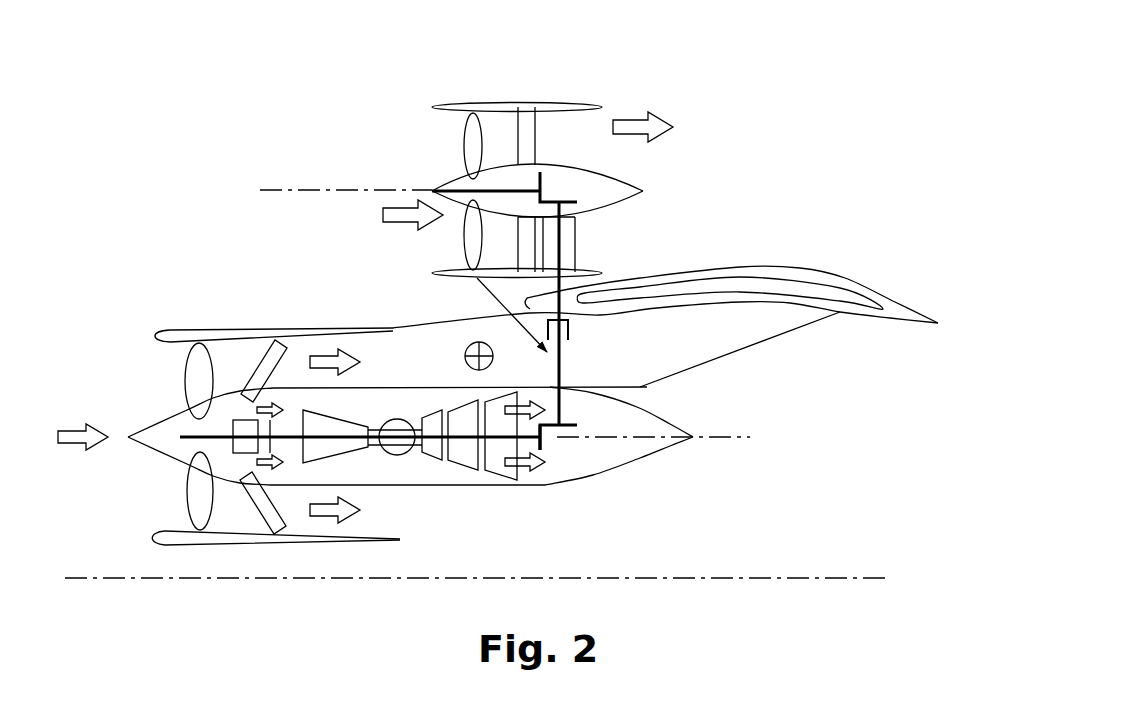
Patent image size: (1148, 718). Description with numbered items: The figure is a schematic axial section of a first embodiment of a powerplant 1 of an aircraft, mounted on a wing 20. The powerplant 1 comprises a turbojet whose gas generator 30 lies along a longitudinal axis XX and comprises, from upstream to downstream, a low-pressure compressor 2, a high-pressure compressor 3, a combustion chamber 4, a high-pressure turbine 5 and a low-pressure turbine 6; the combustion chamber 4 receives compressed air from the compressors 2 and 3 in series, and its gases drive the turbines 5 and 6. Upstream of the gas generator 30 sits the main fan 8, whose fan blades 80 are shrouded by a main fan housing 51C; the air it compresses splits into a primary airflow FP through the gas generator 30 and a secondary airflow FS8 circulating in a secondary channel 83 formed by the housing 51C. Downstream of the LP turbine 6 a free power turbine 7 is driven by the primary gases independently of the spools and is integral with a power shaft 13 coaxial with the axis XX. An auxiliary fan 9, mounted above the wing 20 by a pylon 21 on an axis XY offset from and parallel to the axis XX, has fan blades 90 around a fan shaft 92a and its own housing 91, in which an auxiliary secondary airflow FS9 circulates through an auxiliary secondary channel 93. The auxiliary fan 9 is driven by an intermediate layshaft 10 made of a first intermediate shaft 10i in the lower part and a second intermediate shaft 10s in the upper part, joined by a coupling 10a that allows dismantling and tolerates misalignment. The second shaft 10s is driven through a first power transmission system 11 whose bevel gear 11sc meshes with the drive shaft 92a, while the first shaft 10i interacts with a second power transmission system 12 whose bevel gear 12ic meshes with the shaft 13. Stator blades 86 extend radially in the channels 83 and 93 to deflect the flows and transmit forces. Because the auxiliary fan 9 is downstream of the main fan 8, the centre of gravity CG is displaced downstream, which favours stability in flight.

The powerplant 1 is at (360, 168).
The low-pressure compressor 2 is at (285, 455).
The high-pressure compressor 3 is at (355, 448).
The combustion chamber 4 is at (397, 450).
The high-pressure turbine 5 is at (428, 458).
The low-pressure turbine 6 is at (462, 458).
The free power turbine 7 is at (493, 470).
The main fan 8 is at (187, 497).
The auxiliary fan 9 is at (580, 98).
The intermediate layshaft 10 is at (580, 334).
The coupling 10a is at (540, 316).
The first intermediate shaft 10i is at (560, 363).
The second intermediate shaft 10s is at (565, 237).
The first power transmission system 11 is at (568, 202).
The bevel gear 11sc is at (624, 177).
The second power transmission system 12 is at (577, 427).
The bevel gear 12ic is at (600, 475).
The power shaft 13 is at (540, 450).
The wing 20 is at (665, 259).
The pylon 21 is at (647, 272).
The gas generator 30 is at (366, 523).
The main fan housing 51C is at (217, 543).
The fan blades 80 is at (192, 507).
The secondary channel 83 is at (242, 512).
The stator blades 86 is at (527, 128).
The fan blades 90 is at (473, 155).
The upper blade 91 is at (457, 106).
The fan shaft 92a is at (500, 190).
The auxiliary secondary channel 93 is at (590, 135).
The centre of gravity CG is at (472, 353).
The secondary airflow of the main fan FS8 is at (334, 516).
The auxiliary secondary airflow FS9 is at (657, 127).
The primary airflow FP is at (530, 478).
The longitudinal axis XX is at (737, 418).
The axis of the auxiliary fan XY is at (293, 190).